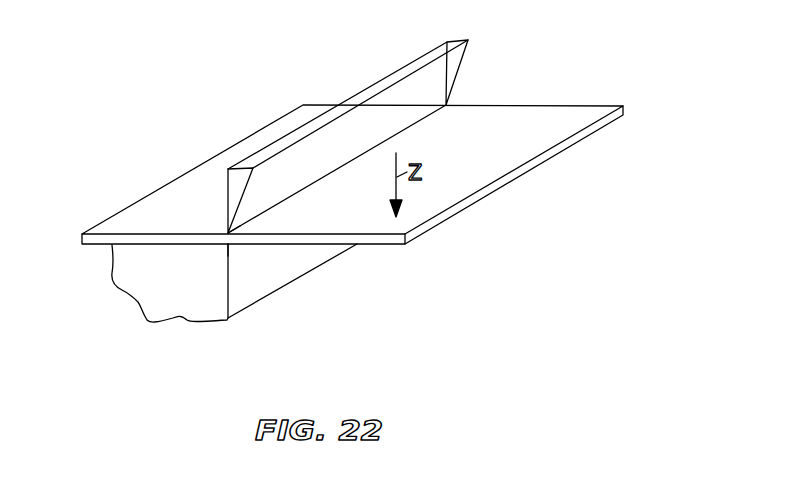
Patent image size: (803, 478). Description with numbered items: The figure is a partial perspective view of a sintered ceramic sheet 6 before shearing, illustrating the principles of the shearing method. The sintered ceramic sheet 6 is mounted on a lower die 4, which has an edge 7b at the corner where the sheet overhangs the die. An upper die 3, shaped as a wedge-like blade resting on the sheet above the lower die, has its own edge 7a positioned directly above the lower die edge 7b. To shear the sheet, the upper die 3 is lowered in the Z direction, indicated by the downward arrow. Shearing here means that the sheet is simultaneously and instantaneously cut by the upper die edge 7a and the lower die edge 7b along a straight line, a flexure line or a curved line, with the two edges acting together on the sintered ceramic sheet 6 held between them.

The upper die 3 is at (467, 41).
The lower die 4 is at (137, 288).
The sintered ceramic sheet 6 is at (518, 158).
The upper die edge 7a is at (228, 231).
The lower die edge 7b is at (224, 247).